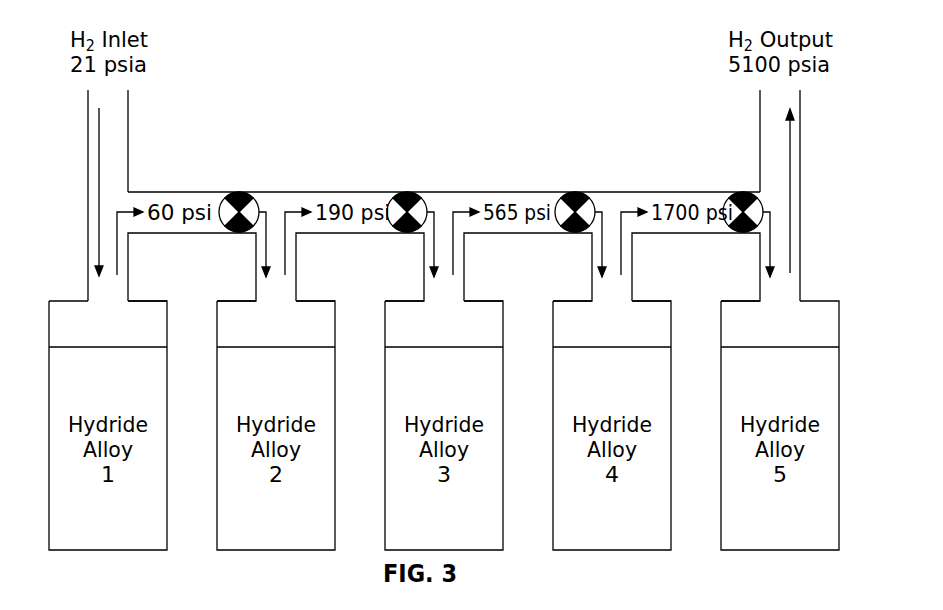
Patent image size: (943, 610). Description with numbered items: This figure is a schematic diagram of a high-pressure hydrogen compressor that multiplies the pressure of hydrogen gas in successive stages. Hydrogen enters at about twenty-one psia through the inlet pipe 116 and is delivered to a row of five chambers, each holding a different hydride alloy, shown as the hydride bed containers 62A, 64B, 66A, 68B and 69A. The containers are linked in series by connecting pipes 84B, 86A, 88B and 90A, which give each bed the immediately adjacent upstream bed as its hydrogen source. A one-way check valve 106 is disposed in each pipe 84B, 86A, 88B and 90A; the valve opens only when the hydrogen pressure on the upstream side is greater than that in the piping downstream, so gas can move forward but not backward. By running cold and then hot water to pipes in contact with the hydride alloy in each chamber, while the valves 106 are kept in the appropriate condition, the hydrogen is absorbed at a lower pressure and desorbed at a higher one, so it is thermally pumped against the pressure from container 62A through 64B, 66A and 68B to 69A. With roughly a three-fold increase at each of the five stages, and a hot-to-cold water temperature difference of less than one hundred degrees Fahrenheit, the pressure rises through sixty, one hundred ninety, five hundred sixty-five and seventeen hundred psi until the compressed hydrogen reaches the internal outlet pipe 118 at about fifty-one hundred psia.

The inlet pipe 116 is at (112, 102).
The internal outlet pipe 118 is at (778, 100).
The connecting pipe 84B is at (186, 202).
The connecting pipe 86A is at (357, 203).
The connecting pipe 88B is at (530, 198).
The connecting pipe 90A is at (705, 197).
The one-way check valve 106 is at (252, 196).
The hydride bed container 62A is at (147, 299).
The hydride bed container 64B is at (315, 299).
The hydride bed container 66A is at (483, 299).
The hydride bed container 68B is at (652, 299).
The hydride bed container 69A is at (745, 299).